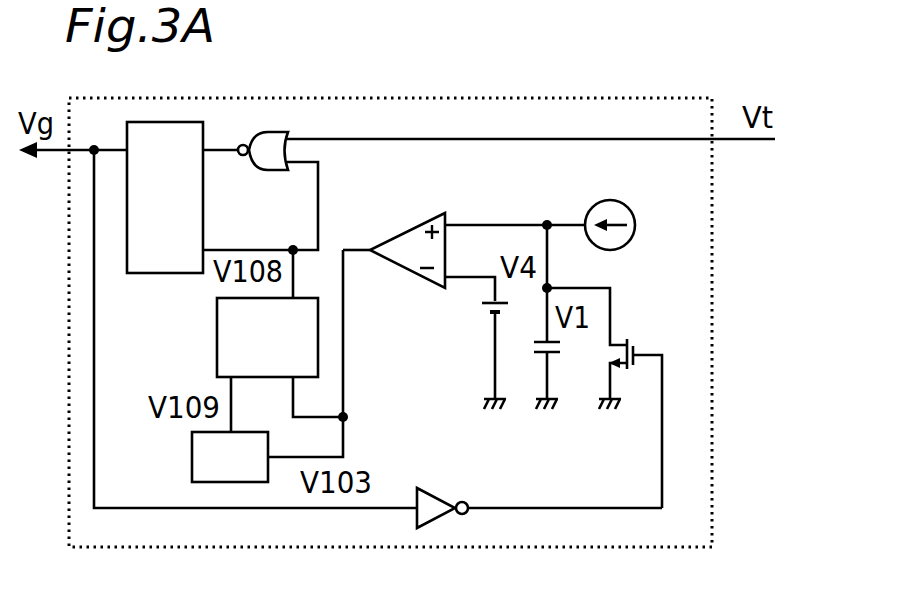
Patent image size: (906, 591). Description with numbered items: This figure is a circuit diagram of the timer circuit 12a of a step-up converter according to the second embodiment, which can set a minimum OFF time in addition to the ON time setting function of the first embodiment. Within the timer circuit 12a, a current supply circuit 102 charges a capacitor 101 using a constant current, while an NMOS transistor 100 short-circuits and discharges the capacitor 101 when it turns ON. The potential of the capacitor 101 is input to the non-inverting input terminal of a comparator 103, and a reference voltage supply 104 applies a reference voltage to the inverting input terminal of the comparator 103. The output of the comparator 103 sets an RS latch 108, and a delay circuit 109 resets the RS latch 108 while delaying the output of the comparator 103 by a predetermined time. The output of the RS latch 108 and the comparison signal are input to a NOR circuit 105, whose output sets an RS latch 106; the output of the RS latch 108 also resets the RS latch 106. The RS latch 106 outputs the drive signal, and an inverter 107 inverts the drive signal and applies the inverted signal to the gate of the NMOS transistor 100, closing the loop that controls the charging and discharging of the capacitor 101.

The NMOS transistor 100 is at (638, 350).
The capacitor 101 is at (540, 358).
The current supply circuit 102 is at (592, 208).
The comparator 103 is at (425, 287).
The reference voltage supply 104 is at (485, 305).
The NOR circuit 105 is at (272, 171).
The RS latch 106 is at (160, 275).
The inverter 107 is at (444, 497).
The RS latch 108 is at (217, 345).
The delay circuit 109 is at (192, 450).
The timer circuit 12a is at (713, 325).